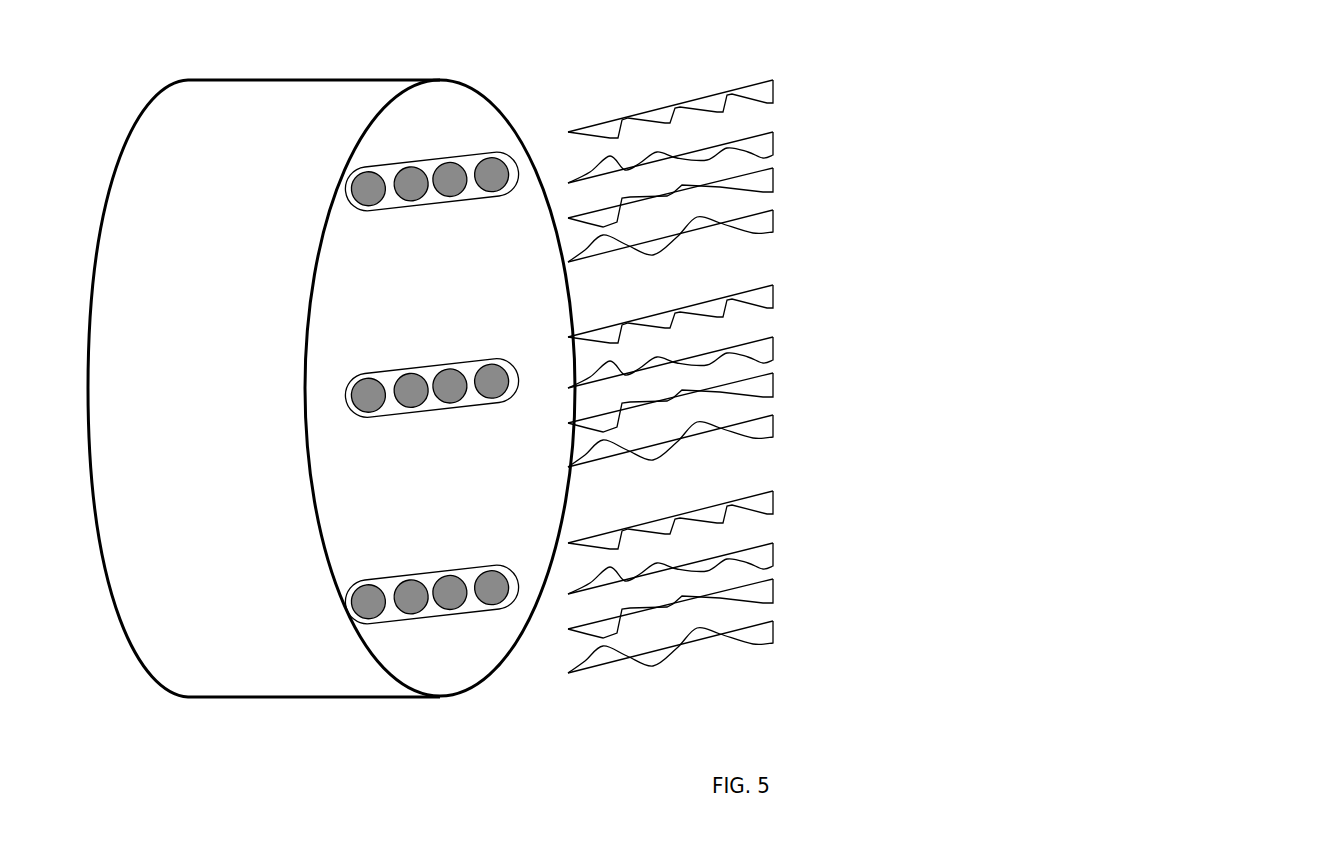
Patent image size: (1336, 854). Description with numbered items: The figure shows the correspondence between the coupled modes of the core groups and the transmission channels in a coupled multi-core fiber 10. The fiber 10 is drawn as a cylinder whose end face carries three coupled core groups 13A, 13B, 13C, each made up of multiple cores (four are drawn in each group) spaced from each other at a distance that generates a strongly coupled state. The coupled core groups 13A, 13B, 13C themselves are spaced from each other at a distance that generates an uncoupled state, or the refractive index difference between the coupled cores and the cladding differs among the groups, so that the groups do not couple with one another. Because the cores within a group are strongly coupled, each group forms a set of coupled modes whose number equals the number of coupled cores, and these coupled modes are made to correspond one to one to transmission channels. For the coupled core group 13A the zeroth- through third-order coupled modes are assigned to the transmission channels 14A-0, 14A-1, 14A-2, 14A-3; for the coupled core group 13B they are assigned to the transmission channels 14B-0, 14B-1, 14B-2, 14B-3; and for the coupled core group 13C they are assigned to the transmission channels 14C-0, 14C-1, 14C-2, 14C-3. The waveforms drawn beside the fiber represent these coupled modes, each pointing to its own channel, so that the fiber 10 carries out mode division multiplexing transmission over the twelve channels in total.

The coupled multi-core fiber 10 is at (238, 100).
The coupled core group 13A is at (380, 167).
The coupled core group 13B is at (383, 370).
The coupled core group 13C is at (377, 578).
The transmission channel 14A-0 is at (790, 98).
The transmission channel 14A-1 is at (790, 149).
The transmission channel 14A-2 is at (790, 183).
The transmission channel 14A-3 is at (790, 217).
The transmission channel 14B-0 is at (790, 303).
The transmission channel 14B-1 is at (790, 355).
The transmission channel 14B-2 is at (790, 388).
The transmission channel 14B-3 is at (790, 423).
The transmission channel 14C-0 is at (790, 508).
The transmission channel 14C-1 is at (790, 548).
The transmission channel 14C-2 is at (790, 595).
The transmission channel 14C-3 is at (790, 628).